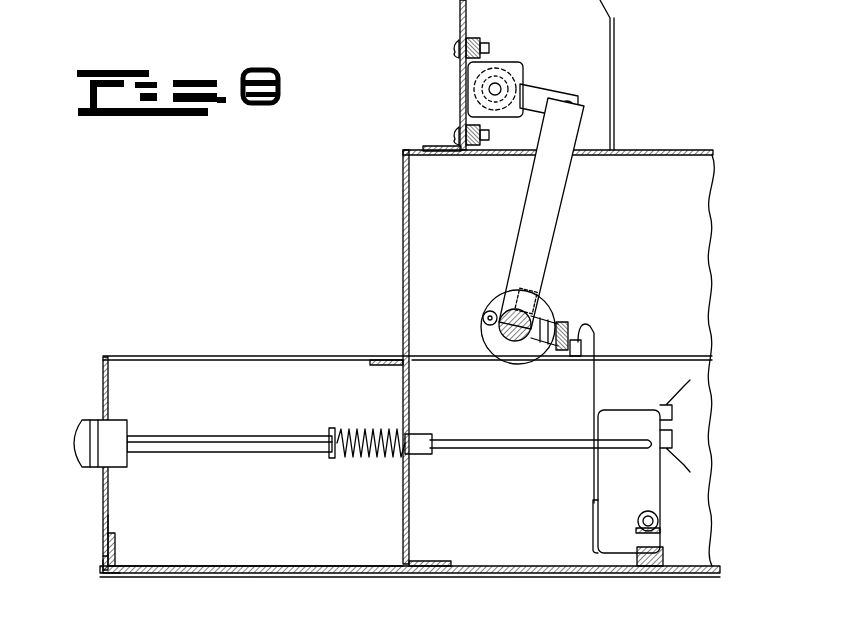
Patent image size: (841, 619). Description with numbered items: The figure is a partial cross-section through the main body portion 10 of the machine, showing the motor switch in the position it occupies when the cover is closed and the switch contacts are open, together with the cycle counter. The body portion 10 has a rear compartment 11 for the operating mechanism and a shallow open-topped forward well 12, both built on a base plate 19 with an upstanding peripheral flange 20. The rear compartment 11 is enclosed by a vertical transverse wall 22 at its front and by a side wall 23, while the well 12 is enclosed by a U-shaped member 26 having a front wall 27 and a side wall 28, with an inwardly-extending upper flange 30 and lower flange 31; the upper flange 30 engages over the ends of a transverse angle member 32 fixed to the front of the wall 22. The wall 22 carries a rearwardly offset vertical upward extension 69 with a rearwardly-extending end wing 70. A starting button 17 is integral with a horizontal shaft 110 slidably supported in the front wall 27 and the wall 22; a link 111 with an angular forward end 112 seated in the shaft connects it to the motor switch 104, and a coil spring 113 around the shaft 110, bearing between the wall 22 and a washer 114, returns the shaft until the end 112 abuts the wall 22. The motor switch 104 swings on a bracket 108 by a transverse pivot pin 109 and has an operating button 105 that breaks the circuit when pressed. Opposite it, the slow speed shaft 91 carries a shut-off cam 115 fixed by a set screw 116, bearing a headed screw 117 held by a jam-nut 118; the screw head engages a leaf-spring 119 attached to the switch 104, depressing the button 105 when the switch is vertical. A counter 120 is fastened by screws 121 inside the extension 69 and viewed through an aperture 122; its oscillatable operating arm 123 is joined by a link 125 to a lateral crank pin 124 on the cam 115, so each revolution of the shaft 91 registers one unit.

The main body portion 10 is at (333, 587).
The rear compartment 11 is at (558, 187).
The forward compartment or well 12 is at (255, 536).
The starting button 17 is at (70, 445).
The base plate 19 is at (378, 567).
The upstanding peripheral flange 20 is at (117, 548).
The vertical transverse wall 22 is at (402, 272).
The side wall 23 is at (714, 272).
The U-shaped member 26 is at (95, 564).
The front wall 27 is at (104, 524).
The side wall 28 is at (128, 502).
The upper flange 30 is at (116, 356).
The lower flange 31 is at (120, 578).
The transverse angle member 32 is at (401, 380).
The vertical upward extension 69 is at (459, 10).
The end wing 70 is at (613, 54).
The slow speed shaft 91 is at (500, 332).
The motor switch 104 is at (660, 490).
The operating button 105 is at (605, 412).
The bracket 108 is at (664, 556).
The transverse pivot pin 109 is at (660, 518).
The horizontal shaft 110 is at (192, 434).
The link 111 is at (505, 450).
The angular forward end 112 is at (422, 436).
The coil spring 113 is at (380, 462).
The washer 114 is at (330, 460).
The shut-off cam 115 is at (552, 312).
The set screw 116 is at (536, 290).
The headed screw 117 is at (576, 358).
The jam-nut 118 is at (570, 322).
The leaf-spring 119 is at (600, 336).
The counter 120 is at (503, 64).
The screws 121 is at (455, 48).
The aperture 122 is at (466, 96).
The operating arm 123 is at (540, 84).
The lateral crank pin 124 is at (484, 312).
The link 125 is at (522, 212).